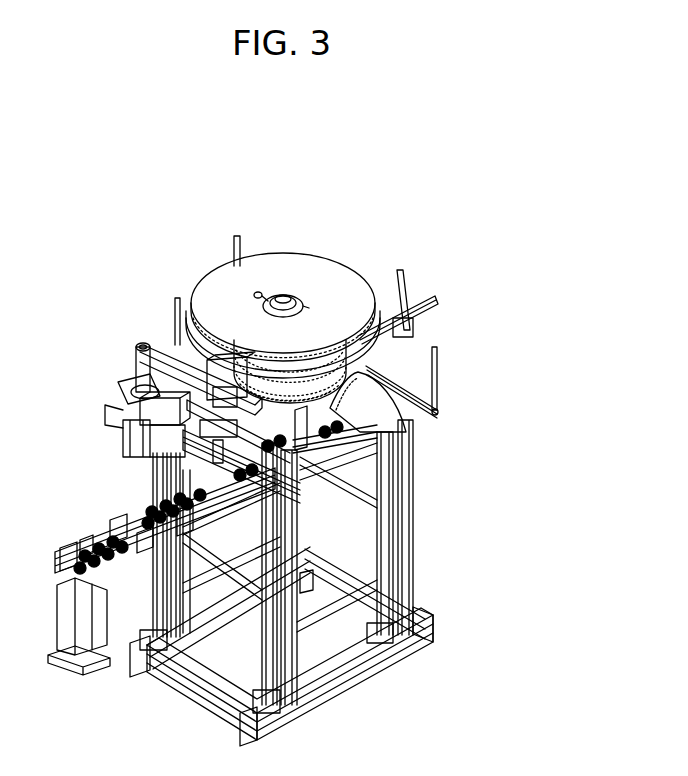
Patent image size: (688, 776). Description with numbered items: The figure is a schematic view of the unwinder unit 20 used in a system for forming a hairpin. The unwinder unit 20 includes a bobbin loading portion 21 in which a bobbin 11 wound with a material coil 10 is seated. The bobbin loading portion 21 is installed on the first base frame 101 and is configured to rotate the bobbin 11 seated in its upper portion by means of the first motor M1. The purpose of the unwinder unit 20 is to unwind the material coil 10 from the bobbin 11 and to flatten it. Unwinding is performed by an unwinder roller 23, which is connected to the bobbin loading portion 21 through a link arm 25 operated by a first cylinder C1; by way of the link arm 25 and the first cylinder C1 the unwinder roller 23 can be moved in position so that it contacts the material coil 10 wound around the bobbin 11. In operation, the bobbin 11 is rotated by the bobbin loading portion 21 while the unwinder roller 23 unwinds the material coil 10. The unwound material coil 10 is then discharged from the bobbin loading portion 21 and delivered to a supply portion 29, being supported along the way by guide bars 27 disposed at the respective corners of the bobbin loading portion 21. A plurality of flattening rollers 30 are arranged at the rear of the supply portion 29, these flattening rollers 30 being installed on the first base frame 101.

The unwinder unit 20 is at (386, 203).
The material coil 10 is at (374, 364).
The bobbin loading portion 21 is at (283, 293).
The unwinder roller 23 is at (248, 375).
The guide bars 27 is at (177, 298).
The supply portion 29 is at (397, 418).
The bobbin 11 is at (178, 333).
The link arm 25 is at (138, 363).
The first cylinder C1 is at (148, 467).
The flattening rollers 30 is at (142, 520).
The first motor M1 is at (310, 490).
The first base frame 101 is at (347, 695).